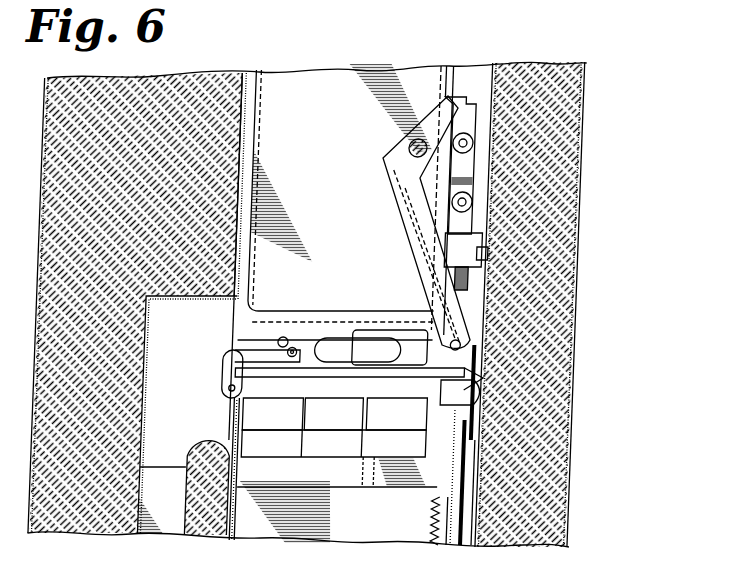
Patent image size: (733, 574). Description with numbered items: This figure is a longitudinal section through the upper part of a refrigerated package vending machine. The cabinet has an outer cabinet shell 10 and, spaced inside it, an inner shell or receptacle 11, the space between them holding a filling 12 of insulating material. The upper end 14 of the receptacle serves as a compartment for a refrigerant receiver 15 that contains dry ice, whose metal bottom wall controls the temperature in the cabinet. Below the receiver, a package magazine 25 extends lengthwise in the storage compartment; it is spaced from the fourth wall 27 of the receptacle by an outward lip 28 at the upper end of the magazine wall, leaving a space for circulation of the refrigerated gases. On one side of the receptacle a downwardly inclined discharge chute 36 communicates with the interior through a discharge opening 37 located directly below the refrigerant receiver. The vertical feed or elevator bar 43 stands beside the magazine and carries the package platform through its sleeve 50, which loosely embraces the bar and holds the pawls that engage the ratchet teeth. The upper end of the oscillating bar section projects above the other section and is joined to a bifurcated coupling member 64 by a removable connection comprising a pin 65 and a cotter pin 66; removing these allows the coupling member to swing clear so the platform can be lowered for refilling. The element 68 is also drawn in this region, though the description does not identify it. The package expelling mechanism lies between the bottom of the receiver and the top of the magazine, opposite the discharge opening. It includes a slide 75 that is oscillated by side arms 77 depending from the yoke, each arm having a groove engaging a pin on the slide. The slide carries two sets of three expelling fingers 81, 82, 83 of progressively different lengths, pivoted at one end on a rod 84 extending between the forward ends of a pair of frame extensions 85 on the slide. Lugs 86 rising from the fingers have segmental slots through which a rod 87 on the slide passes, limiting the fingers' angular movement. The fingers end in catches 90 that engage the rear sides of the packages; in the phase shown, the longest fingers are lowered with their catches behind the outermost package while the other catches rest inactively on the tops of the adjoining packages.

The outer cabinet shell 10 is at (589, 172).
The inner shell or receptacle 11 is at (484, 74).
The filling of insulating material 12 is at (567, 200).
The upper end of receptacle 14 is at (245, 143).
The refrigerant receiver 15 is at (313, 78).
The package magazine 25 is at (272, 538).
The fourth wall of receptacle 27 is at (233, 538).
The outward lip 28 is at (253, 428).
The discharge chute 36 is at (187, 522).
The discharge opening 37 is at (249, 330).
The vertical feed or elevator bar 43 is at (410, 492).
The sleeve 50 is at (473, 490).
The bifurcated coupling member 64 is at (471, 167).
The pin 65 is at (466, 207).
The cotter pin 66 is at (465, 204).
The base plate 68 is at (364, 478).
The slide 75 is at (375, 333).
The side arms 77 is at (399, 182).
The package expelling finger 81 is at (358, 383).
The package expelling finger 82 is at (357, 350).
The package expelling finger 83 is at (431, 393).
The rod 84 is at (243, 388).
The frame extensions 85 is at (275, 348).
The lugs 86 is at (294, 330).
The rod 87 is at (324, 340).
The catches 90 is at (334, 418).